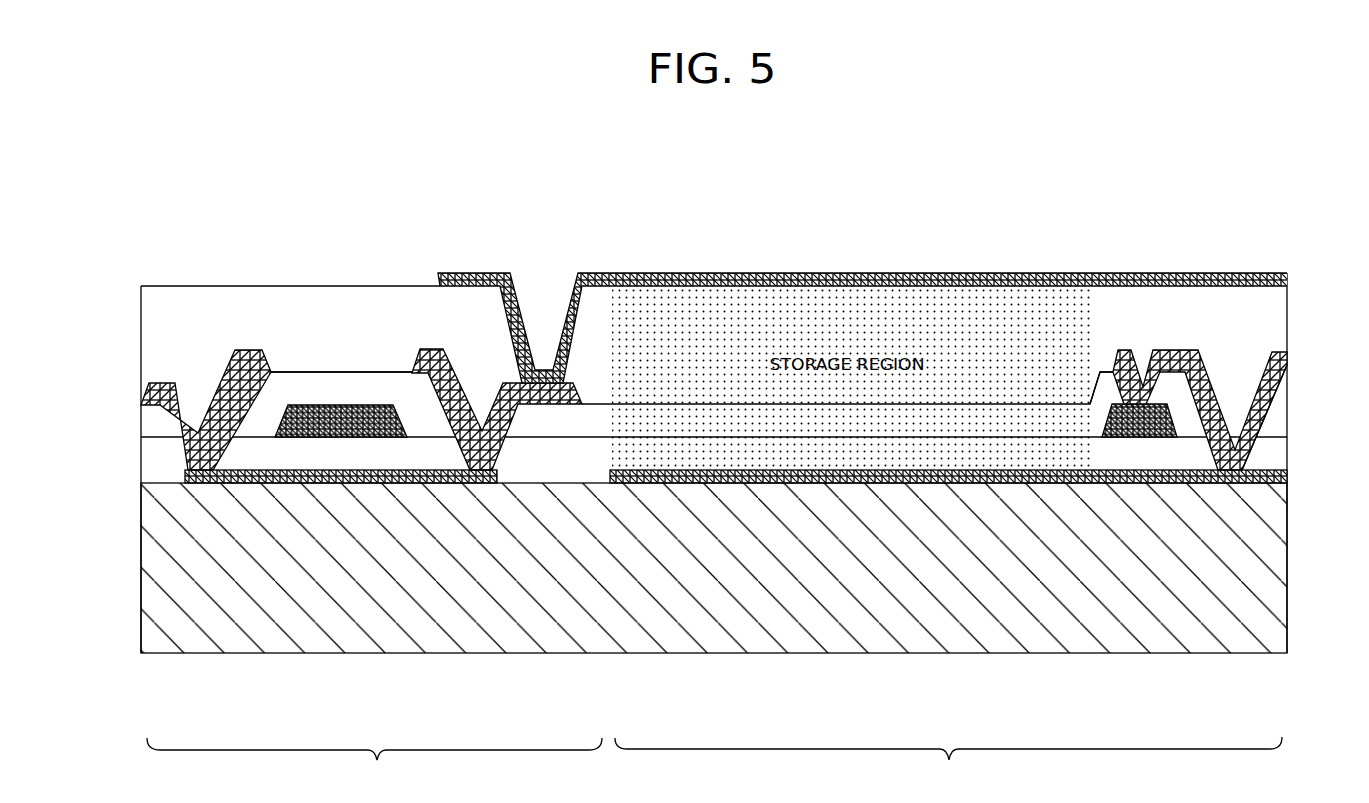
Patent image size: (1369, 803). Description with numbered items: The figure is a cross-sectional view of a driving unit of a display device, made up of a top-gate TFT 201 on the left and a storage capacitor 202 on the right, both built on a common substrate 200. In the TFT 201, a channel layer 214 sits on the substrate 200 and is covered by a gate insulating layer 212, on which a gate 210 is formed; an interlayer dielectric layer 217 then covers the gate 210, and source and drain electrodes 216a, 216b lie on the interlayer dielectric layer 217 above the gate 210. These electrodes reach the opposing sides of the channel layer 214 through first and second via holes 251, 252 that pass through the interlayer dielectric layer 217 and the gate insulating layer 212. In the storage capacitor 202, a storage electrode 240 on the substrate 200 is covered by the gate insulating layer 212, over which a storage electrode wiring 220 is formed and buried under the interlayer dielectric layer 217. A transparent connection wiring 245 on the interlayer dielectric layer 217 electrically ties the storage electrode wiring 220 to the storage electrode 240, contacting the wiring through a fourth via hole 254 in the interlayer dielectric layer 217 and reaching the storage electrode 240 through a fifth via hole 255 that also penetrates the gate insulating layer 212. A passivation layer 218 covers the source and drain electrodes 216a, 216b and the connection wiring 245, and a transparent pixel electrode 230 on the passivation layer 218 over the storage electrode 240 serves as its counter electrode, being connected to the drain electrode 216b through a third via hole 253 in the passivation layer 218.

The substrate 200 is at (712, 620).
The TFT 201 is at (374, 767).
The storage capacitor 202 is at (948, 767).
The gate 210 is at (331, 422).
The gate insulating layer 212 is at (143, 462).
The channel layer 214 is at (422, 478).
The source electrode 216a is at (240, 349).
The drain electrode 216b is at (440, 349).
The interlayer dielectric layer 217 is at (143, 424).
The passivation layer 218 is at (143, 333).
The storage electrode wiring 220 is at (1140, 418).
The pixel electrode 230 is at (914, 273).
The storage electrode 240 is at (946, 480).
The connection wiring 245 is at (1175, 350).
The semiconductor layer 251 is at (247, 397).
The ohmic contact layer 252 is at (433, 397).
The third via hole 253 is at (572, 325).
The connection electrode 254 is at (1121, 378).
The electrode edge 255 is at (1273, 410).